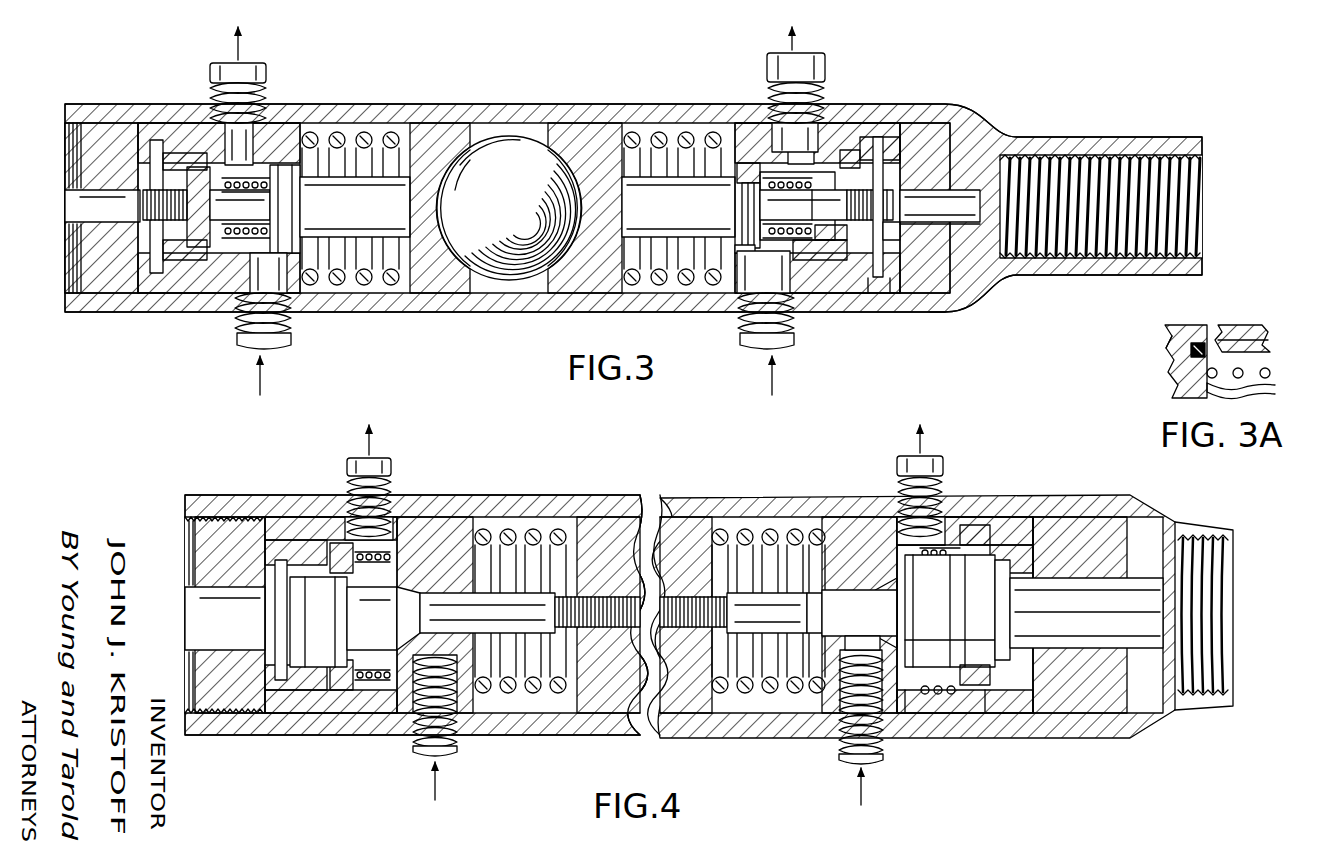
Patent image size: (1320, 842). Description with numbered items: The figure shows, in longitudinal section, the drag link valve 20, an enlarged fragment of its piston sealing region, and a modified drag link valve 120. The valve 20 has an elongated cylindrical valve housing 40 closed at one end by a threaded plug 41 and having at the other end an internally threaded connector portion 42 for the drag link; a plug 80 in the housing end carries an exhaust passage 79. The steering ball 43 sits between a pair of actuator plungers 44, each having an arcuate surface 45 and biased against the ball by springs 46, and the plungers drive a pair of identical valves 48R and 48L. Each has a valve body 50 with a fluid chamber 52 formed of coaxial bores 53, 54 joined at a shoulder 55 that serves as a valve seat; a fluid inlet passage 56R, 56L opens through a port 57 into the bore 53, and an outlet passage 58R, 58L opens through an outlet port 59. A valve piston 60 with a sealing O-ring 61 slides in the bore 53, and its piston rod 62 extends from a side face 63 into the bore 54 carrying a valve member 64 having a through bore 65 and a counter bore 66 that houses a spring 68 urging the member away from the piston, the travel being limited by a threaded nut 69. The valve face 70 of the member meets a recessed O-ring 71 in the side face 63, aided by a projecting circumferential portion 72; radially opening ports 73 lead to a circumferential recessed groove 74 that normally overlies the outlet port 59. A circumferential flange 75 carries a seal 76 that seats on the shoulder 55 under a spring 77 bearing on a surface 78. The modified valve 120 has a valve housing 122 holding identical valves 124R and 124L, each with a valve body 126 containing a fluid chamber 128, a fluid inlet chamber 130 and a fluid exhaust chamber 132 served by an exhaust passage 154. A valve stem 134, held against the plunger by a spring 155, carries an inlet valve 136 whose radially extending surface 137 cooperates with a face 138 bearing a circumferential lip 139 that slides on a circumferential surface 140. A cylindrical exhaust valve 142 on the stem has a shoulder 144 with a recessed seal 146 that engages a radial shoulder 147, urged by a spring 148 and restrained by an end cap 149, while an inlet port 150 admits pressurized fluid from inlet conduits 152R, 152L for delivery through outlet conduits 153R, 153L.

In FIG. 3, the drag link valve 20 is at (1046, 88).
In FIG. 3, the valve housing 40 is at (514, 106).
In FIG. 3, the threaded plug 41 is at (106, 128).
In FIG. 3, the internally threaded connector portion 42 is at (1165, 199).
In FIG. 3, the steering ball 43 is at (518, 218).
In FIG. 3, the actuator plunger 44 is at (428, 135).
In FIG. 3, the arcuate surface 45 is at (452, 250).
In FIG. 3, the spring 46 is at (365, 140).
In FIG. 3, the valve 48L is at (285, 128).
In FIG. 3, the valve 48R is at (798, 194).
In FIG. 3, the valve body 50 is at (797, 293).
In FIG. 3, the fluid chamber 52 is at (900, 181).
In FIG. 3, the bore 53 is at (752, 158).
In FIG. 3, the bore 54 is at (860, 130).
In FIG. 3, the shoulder 55 is at (832, 247).
In FIG. 3, the fluid inlet passage 56L is at (237, 344).
In FIG. 3, the fluid inlet passage 56R is at (745, 355).
In FIG. 3, the port 57 is at (763, 272).
In FIG. 3, the outlet passage 58L is at (213, 73).
In FIG. 3, the outlet passage 58R is at (782, 60).
In FIG. 3, the outlet port 59 is at (798, 144).
In FIG. 3, the valve piston 60 is at (736, 154).
In FIG. 3, the sealing O-ring 61 is at (747, 164).
In FIG. 3, the piston rod 62 is at (745, 223).
In FIG. 3A, the side face 63 is at (1168, 368).
In FIG. 3, the valve member 64 is at (878, 171).
In FIG. 3, the through bore 65 is at (829, 230).
In FIG. 3, the counter bore 66 is at (803, 205).
In FIG. 3, the spring 68 is at (760, 202).
In FIG. 3, the threaded nut 69 is at (940, 235).
In FIG. 3A, the valve face 70 is at (1218, 332).
In FIG. 3A, the recessed O-ring 71 is at (1167, 347).
In FIG. 3A, the projecting circumferential portion 72 is at (1266, 339).
In FIG. 3, the radially opening ports 73 is at (842, 152).
In FIG. 3, the circumferential recessed groove 74 is at (740, 244).
In FIG. 3, the circumferential flange 75 is at (898, 200).
In FIG. 3, the seal 76 is at (883, 234).
In FIG. 3, the spring 77 is at (873, 297).
In FIG. 3, the surface 78 is at (890, 300).
In FIG. 3, the passage 79 is at (938, 219).
In FIG. 3, the plug 80 is at (937, 303).
In FIG. 4, the modified drag link valve 120 is at (658, 490).
In FIG. 4, the valve housing 122 is at (557, 502).
In FIG. 4, the valve 124L is at (422, 510).
In FIG. 4, the valve 124R is at (958, 598).
In FIG. 4, the valve body 126 is at (970, 512).
In FIG. 4, the fluid chamber 128 is at (932, 708).
In FIG. 4, the fluid inlet chamber 130 is at (892, 575).
In FIG. 4, the fluid exhaust chamber 132 is at (1025, 550).
In FIG. 4, the valve stem 134 is at (772, 632).
In FIG. 4, the inlet valve 136 is at (872, 618).
In FIG. 4, the radially extending surface 137 is at (900, 618).
In FIG. 4, the face 138 is at (903, 525).
In FIG. 4, the circumferential lip 139 is at (892, 710).
In FIG. 4, the circumferential surface 140 is at (897, 638).
In FIG. 4, the exhaust valve 142 is at (1015, 625).
In FIG. 4, the shoulder 144 is at (977, 695).
In FIG. 4, the recessed seal 146 is at (1000, 657).
In FIG. 4, the radial shoulder 147 is at (998, 518).
In FIG. 4, the spring 148 is at (945, 547).
In FIG. 4, the end cap 149 is at (1013, 570).
In FIG. 4, the inlet port 150 is at (861, 646).
In FIG. 4, the inlet conduit 152L is at (403, 747).
In FIG. 4, the inlet conduit 152R is at (839, 756).
In FIG. 4, the outlet conduit 153L is at (352, 475).
In FIG. 4, the outlet conduit 153R is at (905, 447).
In FIG. 4, the exhaust passage 154 is at (1153, 606).
In FIG. 4, the spring 155 is at (768, 515).